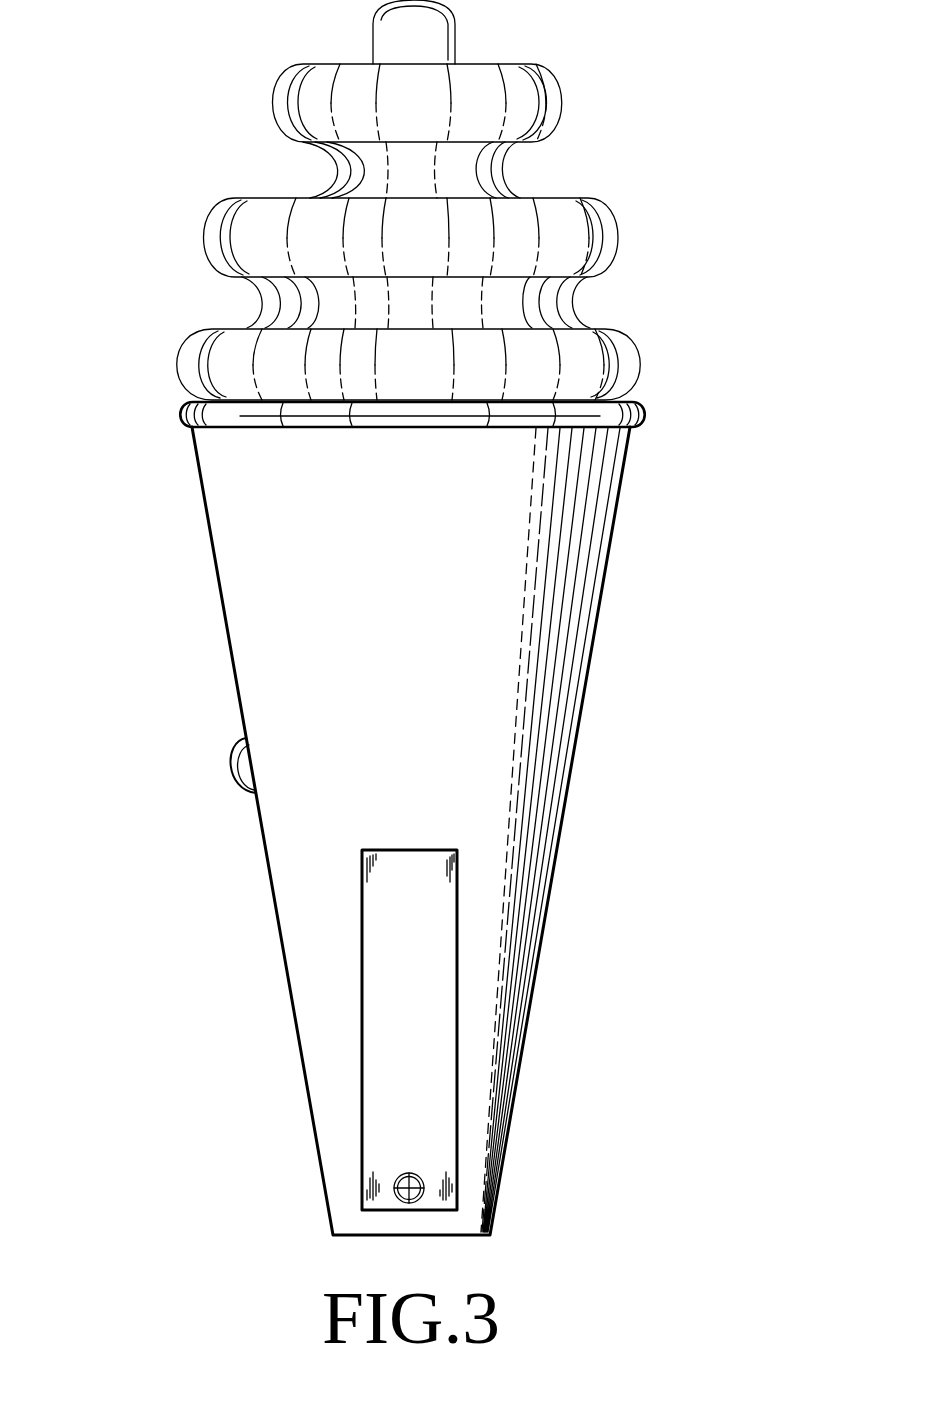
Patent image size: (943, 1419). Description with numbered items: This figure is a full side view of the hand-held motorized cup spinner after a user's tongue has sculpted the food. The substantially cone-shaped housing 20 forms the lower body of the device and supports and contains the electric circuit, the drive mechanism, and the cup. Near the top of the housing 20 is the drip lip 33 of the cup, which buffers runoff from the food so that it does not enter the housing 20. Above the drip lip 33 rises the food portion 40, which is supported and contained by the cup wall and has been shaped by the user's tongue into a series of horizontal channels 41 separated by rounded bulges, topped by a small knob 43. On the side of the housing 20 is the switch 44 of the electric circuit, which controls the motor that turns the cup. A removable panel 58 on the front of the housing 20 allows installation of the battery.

The housing 20 is at (253, 563).
The drip lip 33 is at (603, 417).
The food portion 40 is at (243, 232).
The horizontal channels 41 is at (585, 302).
The knob 43 is at (435, 28).
The switch 44 is at (242, 765).
The removable panel 58 is at (435, 1068).